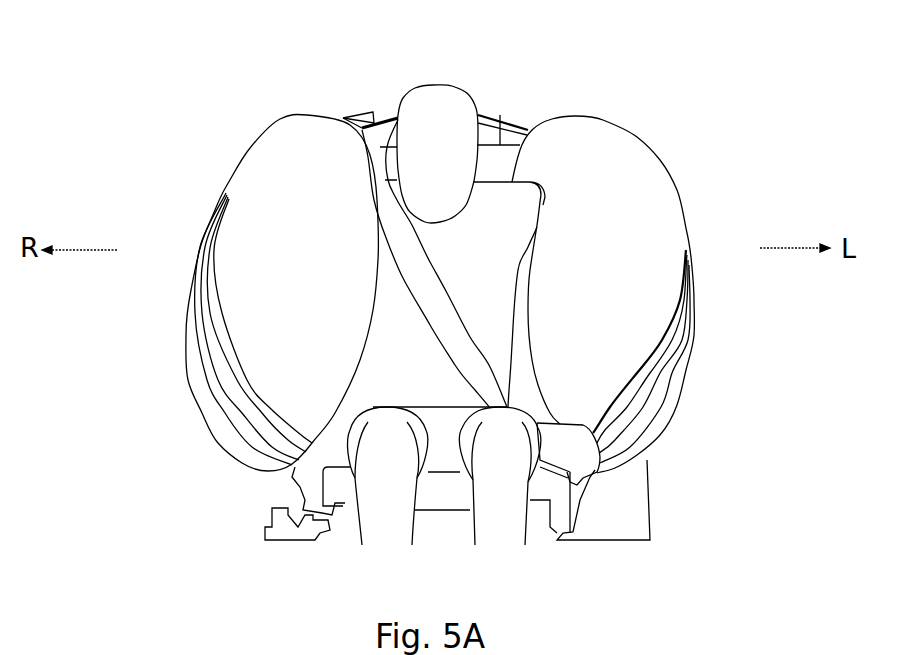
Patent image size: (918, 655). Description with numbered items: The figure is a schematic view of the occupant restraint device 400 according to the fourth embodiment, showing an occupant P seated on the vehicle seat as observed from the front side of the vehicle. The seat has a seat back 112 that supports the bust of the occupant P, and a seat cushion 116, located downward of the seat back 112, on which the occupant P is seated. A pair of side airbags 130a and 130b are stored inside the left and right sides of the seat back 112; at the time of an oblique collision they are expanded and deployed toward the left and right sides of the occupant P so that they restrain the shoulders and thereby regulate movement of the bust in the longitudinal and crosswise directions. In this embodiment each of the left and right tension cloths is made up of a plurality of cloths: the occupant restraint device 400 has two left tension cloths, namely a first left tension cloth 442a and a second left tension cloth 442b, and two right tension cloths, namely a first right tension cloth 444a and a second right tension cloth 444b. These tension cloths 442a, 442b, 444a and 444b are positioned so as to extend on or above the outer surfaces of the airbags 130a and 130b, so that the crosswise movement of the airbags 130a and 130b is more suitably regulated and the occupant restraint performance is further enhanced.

The occupant P is at (430, 74).
The seat back 112 is at (502, 140).
The seat cushion 116 is at (538, 484).
The airbag 130a is at (683, 163).
The airbag 130b is at (224, 149).
The occupant restraint device 400 is at (197, 440).
The first left tension cloth 442a is at (627, 413).
The second left tension cloth 442b is at (673, 375).
The first right tension cloth 444a is at (235, 399).
The second right tension cloth 444b is at (233, 362).